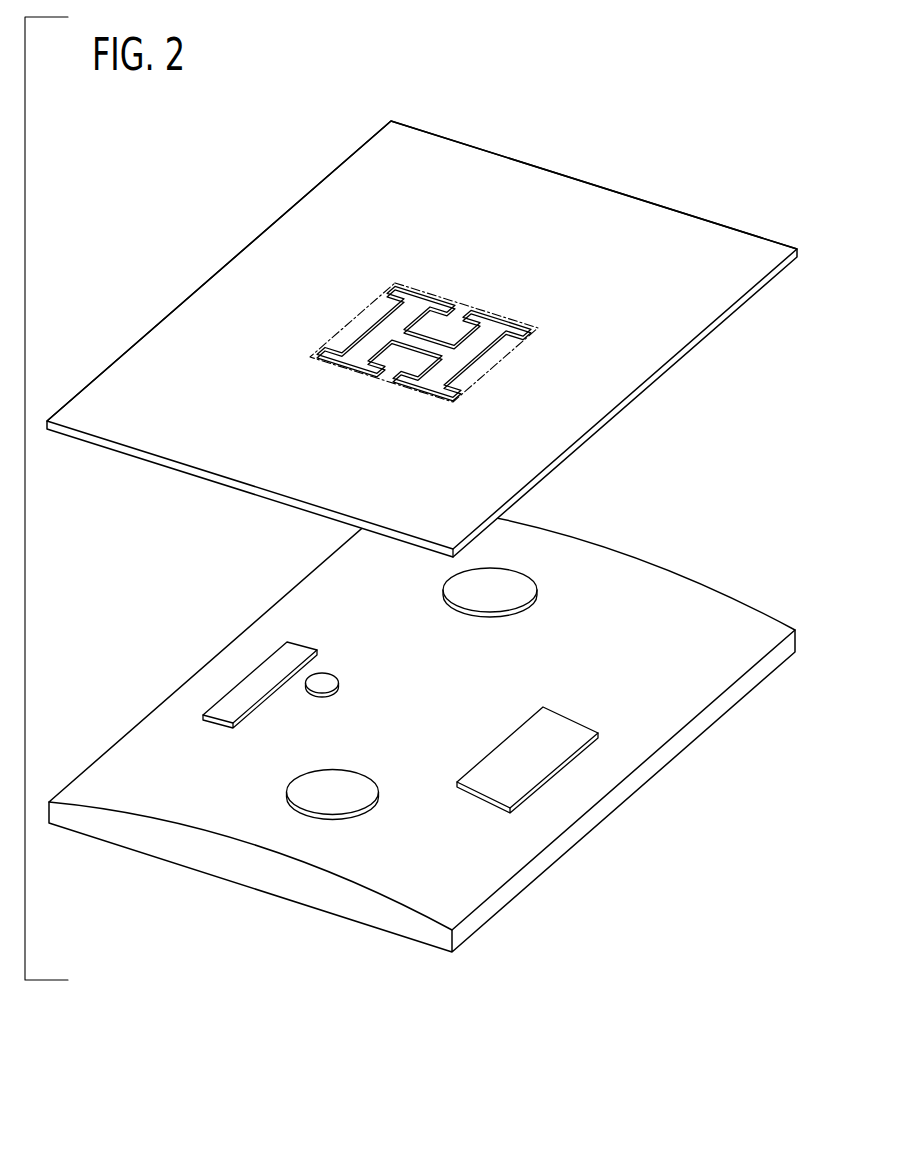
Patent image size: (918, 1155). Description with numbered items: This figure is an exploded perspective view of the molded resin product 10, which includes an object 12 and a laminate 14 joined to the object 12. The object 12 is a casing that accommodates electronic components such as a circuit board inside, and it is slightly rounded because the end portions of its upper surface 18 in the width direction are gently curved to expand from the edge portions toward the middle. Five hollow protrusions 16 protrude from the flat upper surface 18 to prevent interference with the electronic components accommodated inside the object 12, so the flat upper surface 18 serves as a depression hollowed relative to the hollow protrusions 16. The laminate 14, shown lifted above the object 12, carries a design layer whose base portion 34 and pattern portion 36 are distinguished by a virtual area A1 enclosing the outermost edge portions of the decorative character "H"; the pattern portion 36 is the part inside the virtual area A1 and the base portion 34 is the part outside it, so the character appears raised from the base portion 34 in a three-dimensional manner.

The molded resin product 10 is at (688, 107).
The object 12 is at (541, 877).
The laminate 14 is at (422, 339).
The hollow protrusions 16 is at (408, 687).
The upper surface 18 is at (298, 620).
The base portion 34 is at (238, 277).
The pattern portion 36 is at (413, 307).
The virtual area A1 is at (362, 313).